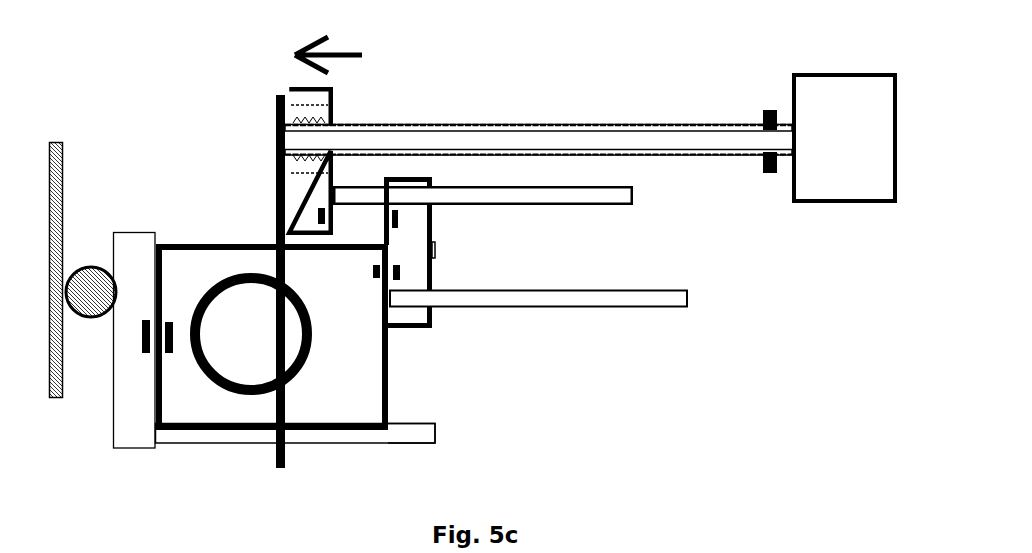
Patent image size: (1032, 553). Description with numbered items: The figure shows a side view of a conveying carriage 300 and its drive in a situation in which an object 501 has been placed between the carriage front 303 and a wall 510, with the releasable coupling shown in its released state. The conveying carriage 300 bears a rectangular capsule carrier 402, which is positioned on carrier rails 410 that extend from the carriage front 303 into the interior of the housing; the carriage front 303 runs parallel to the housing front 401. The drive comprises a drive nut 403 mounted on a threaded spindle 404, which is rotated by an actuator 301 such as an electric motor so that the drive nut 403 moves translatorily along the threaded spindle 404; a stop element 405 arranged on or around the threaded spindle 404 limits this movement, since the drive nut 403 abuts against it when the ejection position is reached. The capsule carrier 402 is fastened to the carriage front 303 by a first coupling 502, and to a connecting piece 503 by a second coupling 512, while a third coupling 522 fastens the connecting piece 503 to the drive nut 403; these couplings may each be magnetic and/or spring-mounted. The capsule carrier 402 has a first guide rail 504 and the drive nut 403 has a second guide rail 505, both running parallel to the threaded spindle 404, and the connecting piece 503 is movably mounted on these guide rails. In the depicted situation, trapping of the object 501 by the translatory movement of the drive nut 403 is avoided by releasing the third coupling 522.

The conveying carriage 300 is at (448, 428).
The actuator 301 is at (856, 185).
The carriage front 303 is at (141, 436).
The housing front 401 is at (276, 152).
The capsule carrier 402 is at (375, 378).
The drive nut 403 is at (326, 103).
The threaded spindle 404 is at (643, 124).
The stop element 405 is at (768, 175).
The carrier rails 410 is at (398, 434).
The object 501 is at (85, 266).
The first coupling 502 is at (174, 335).
The connecting piece 503 is at (420, 318).
The first guide rail 504 is at (688, 298).
The second guide rail 505 is at (628, 204).
The wall 510 is at (63, 146).
The second coupling 512 is at (373, 270).
The third coupling 522 is at (318, 216).